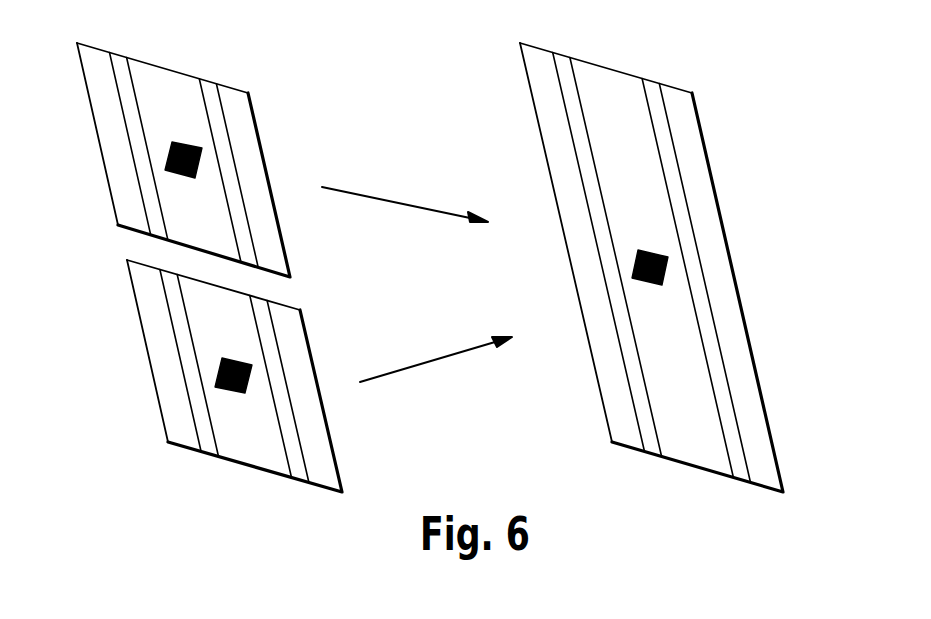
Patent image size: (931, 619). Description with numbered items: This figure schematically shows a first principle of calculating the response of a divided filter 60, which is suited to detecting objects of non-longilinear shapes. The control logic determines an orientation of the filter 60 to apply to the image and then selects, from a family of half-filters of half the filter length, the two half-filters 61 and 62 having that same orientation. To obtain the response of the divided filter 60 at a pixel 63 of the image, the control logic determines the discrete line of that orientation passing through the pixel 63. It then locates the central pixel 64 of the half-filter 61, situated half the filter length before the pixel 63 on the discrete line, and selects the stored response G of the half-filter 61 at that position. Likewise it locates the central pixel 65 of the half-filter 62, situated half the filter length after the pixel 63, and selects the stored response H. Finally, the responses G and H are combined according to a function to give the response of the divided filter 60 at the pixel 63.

The divided filter 60 is at (622, 135).
The half-filter 61 is at (212, 315).
The half-filter 62 is at (168, 85).
The pixel 63 is at (653, 250).
The central pixel 64 is at (217, 367).
The central pixel 65 is at (200, 167).